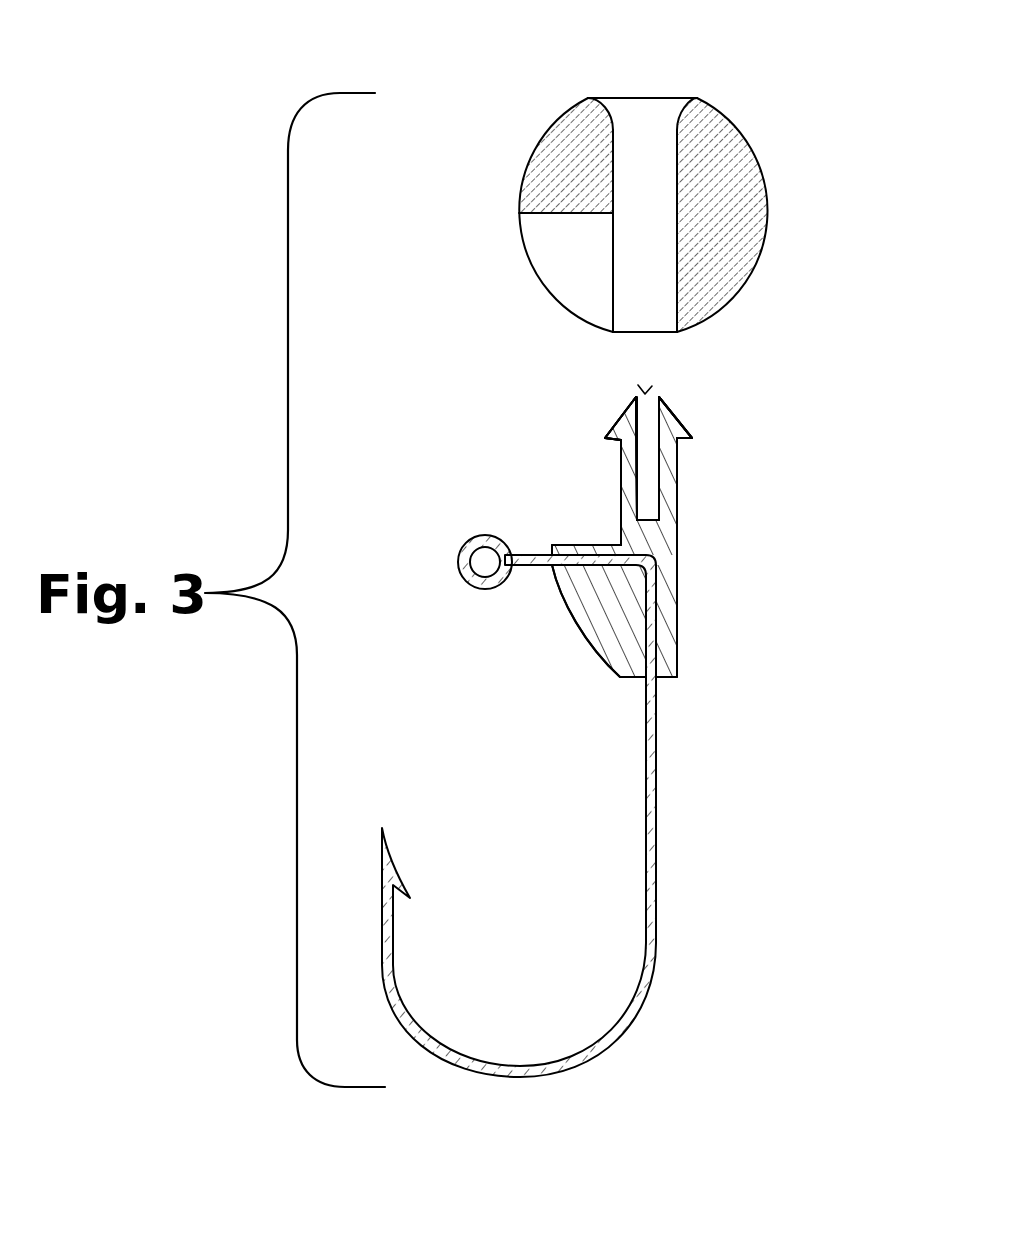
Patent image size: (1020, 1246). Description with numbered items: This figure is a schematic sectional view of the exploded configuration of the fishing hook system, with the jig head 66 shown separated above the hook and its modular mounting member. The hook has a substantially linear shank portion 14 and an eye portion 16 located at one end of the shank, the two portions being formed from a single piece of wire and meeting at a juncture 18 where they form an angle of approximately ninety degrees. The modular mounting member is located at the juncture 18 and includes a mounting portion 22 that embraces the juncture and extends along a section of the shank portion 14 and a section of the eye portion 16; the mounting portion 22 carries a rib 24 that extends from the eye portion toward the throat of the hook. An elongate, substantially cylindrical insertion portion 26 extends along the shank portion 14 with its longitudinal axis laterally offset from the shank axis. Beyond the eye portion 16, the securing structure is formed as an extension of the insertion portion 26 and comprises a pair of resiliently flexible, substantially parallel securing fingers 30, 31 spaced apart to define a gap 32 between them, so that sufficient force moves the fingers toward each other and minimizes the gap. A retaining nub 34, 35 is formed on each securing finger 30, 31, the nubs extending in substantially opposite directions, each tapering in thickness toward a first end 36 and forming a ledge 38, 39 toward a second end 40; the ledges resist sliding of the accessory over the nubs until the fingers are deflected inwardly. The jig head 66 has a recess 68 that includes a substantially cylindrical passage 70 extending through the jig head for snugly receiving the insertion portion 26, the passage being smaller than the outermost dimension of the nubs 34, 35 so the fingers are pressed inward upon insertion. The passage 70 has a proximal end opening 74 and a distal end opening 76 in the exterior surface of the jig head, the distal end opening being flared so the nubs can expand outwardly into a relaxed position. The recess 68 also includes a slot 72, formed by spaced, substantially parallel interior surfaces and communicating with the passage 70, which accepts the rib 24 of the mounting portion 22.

The shank portion 14 is at (656, 882).
The eye portion 16 is at (508, 575).
The juncture 18 is at (655, 558).
The mounting portion 22 is at (583, 544).
The rib 24 is at (615, 605).
The insertion portion 26 is at (677, 623).
The securing finger 30 is at (622, 512).
The securing finger 31 is at (677, 505).
The gap 32 is at (645, 393).
The retaining nub 34 is at (625, 420).
The retaining nub 35 is at (670, 425).
The first end of the nub 36 is at (612, 432).
The ledge 38 is at (617, 440).
The ledge 39 is at (677, 440).
The second end of the nub 40 is at (633, 397).
The jig head 66 is at (717, 107).
The recess 68 is at (563, 284).
The passage 70 is at (640, 130).
The slot 72 is at (538, 233).
The proximal end opening 74 is at (657, 333).
The distal end opening 76 is at (620, 97).